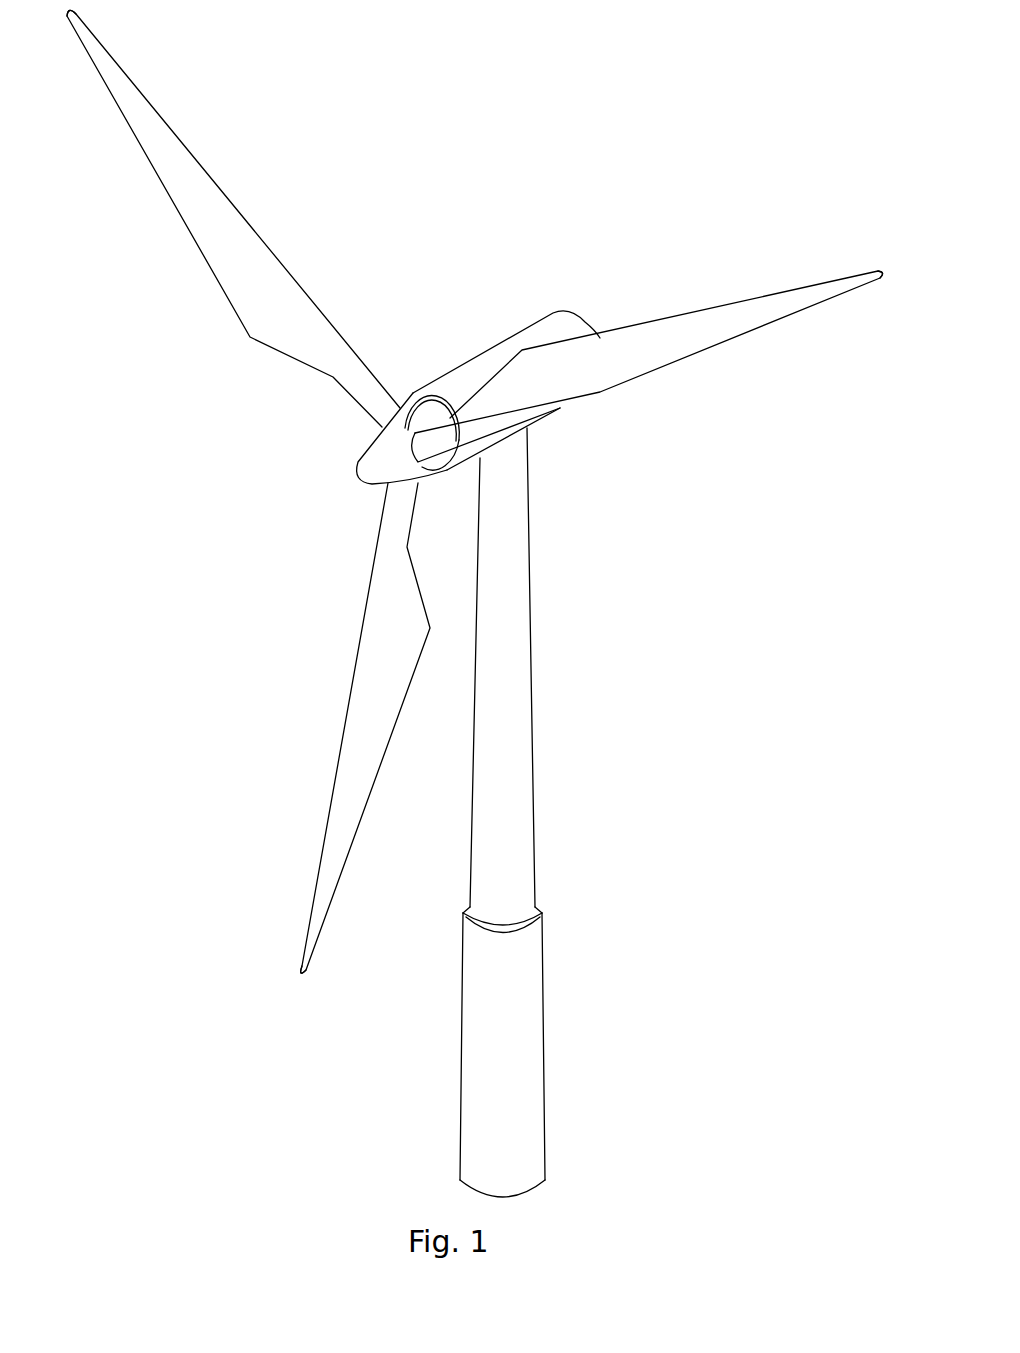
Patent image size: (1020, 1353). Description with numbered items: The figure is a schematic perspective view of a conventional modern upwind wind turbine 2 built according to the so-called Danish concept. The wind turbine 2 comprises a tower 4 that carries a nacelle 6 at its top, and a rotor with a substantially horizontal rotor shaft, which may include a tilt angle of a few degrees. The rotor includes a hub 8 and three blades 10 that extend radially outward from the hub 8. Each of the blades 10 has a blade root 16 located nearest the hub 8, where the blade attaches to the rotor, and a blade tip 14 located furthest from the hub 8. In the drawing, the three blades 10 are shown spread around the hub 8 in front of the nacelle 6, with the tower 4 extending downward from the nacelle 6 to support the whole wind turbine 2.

The wind turbine 2 is at (627, 750).
The tower 4 is at (522, 672).
The nacelle 6 is at (467, 373).
The hub 8 is at (372, 458).
The blades 10 is at (263, 310).
The blade tip 14 is at (108, 68).
The blade root 16 is at (380, 405).